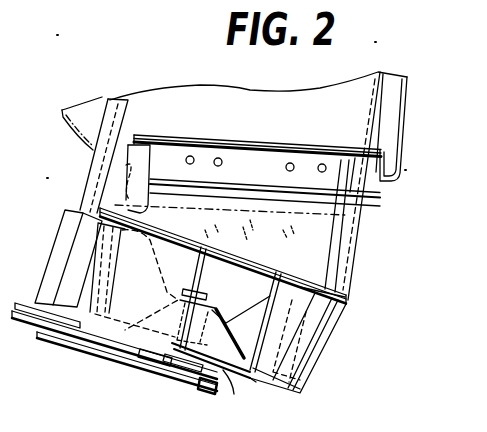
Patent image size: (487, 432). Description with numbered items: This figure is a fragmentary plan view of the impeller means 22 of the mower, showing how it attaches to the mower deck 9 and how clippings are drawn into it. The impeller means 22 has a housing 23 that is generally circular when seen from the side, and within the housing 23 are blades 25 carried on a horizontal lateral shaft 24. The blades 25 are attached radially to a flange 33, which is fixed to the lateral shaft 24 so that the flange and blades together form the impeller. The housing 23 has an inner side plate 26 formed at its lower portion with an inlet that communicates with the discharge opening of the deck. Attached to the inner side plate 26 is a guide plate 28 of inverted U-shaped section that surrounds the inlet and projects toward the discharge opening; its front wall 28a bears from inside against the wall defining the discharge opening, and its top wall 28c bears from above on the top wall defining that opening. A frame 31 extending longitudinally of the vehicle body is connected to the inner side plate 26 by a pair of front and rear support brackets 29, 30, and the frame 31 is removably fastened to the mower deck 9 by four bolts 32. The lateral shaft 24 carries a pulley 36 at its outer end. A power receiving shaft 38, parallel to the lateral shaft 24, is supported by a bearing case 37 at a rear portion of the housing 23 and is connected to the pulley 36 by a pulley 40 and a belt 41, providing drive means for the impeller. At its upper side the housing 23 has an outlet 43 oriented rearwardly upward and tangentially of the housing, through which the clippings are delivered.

The mower deck 9 is at (182, 100).
The impeller means 22 is at (320, 332).
The housing 23 is at (293, 369).
The horizontal lateral shaft 24 is at (170, 378).
The blades 25 is at (245, 327).
The inner side plate 26 is at (183, 242).
The guide plate 28 is at (315, 263).
The front wall 28a is at (324, 243).
The top wall 28c is at (223, 319).
The front support bracket 29 is at (349, 224).
The rear support bracket 30 is at (127, 189).
The frame 31 is at (262, 162).
The bolts 32 is at (218, 158).
The flange 33 is at (234, 394).
The pulley 36 is at (201, 383).
The bearing case 37 is at (67, 243).
The power receiving shaft 38 is at (115, 117).
The pulley 40 is at (75, 347).
The belt 41 is at (128, 354).
The outlet 43 is at (251, 380).